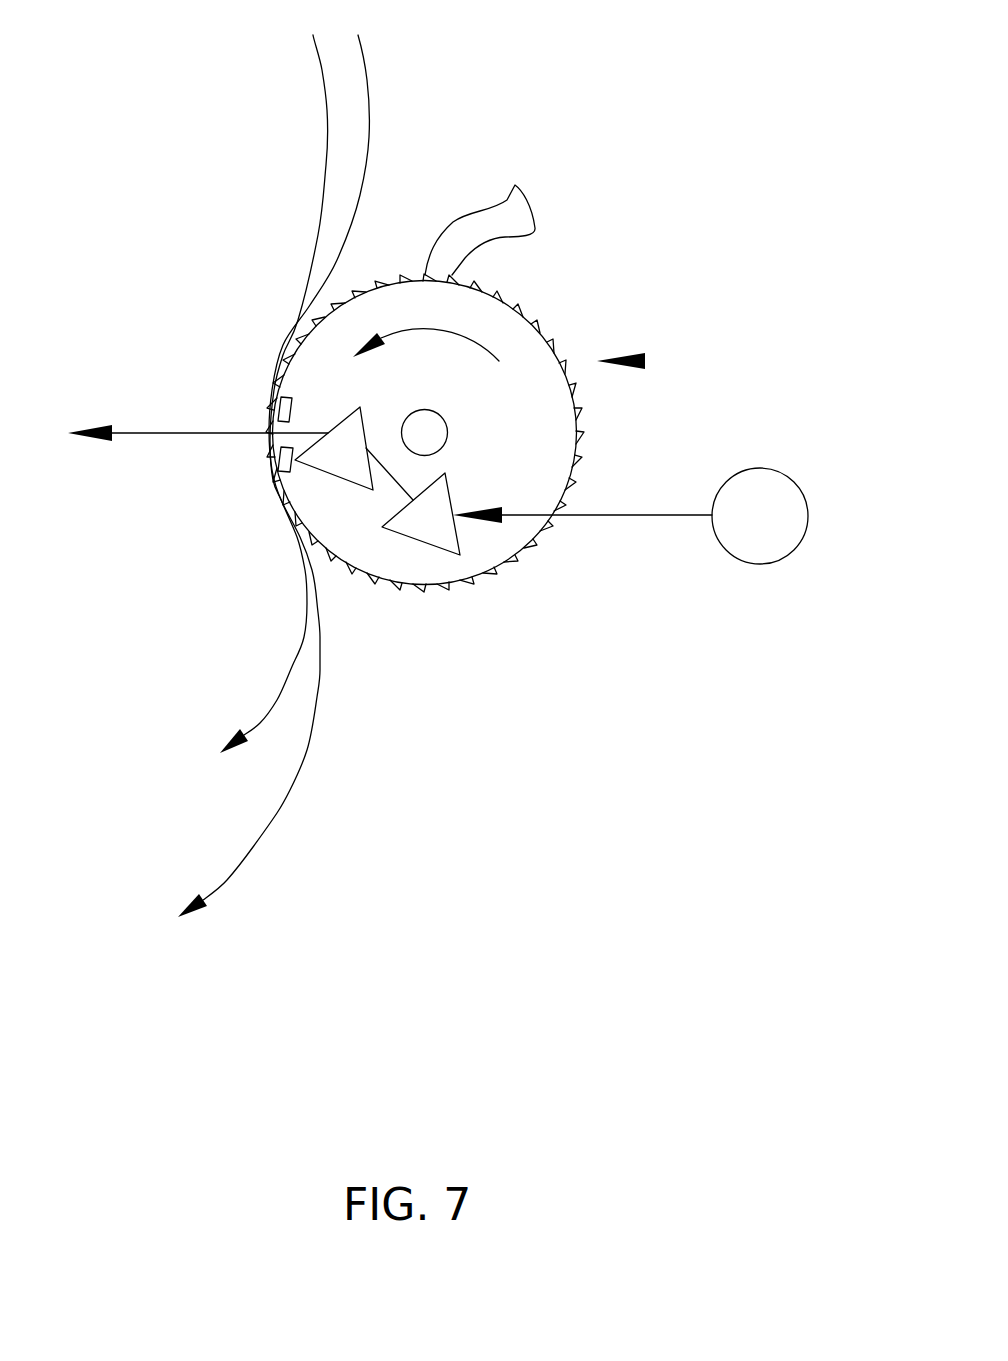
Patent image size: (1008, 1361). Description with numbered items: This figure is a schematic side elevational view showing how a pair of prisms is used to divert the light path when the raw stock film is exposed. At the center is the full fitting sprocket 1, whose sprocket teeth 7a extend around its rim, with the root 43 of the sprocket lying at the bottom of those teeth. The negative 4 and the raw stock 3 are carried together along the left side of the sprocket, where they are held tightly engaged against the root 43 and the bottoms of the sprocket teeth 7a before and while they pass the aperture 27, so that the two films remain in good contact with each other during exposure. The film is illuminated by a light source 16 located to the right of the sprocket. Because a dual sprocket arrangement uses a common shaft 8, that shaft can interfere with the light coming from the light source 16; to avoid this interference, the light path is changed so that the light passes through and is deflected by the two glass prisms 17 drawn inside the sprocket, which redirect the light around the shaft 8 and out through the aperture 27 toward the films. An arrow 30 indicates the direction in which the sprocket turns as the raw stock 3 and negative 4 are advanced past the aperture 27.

The full fitting sprocket 1 is at (508, 330).
The raw stock 3 is at (327, 160).
The negative 4 is at (370, 78).
The sprocket teeth 7a is at (491, 205).
The common shaft 8 is at (450, 433).
The light source 16 is at (760, 564).
The glass prisms 17 is at (298, 462).
The aperture 27 is at (272, 408).
The direction arrow 30 is at (645, 357).
The root of the sprocket 43 is at (530, 550).